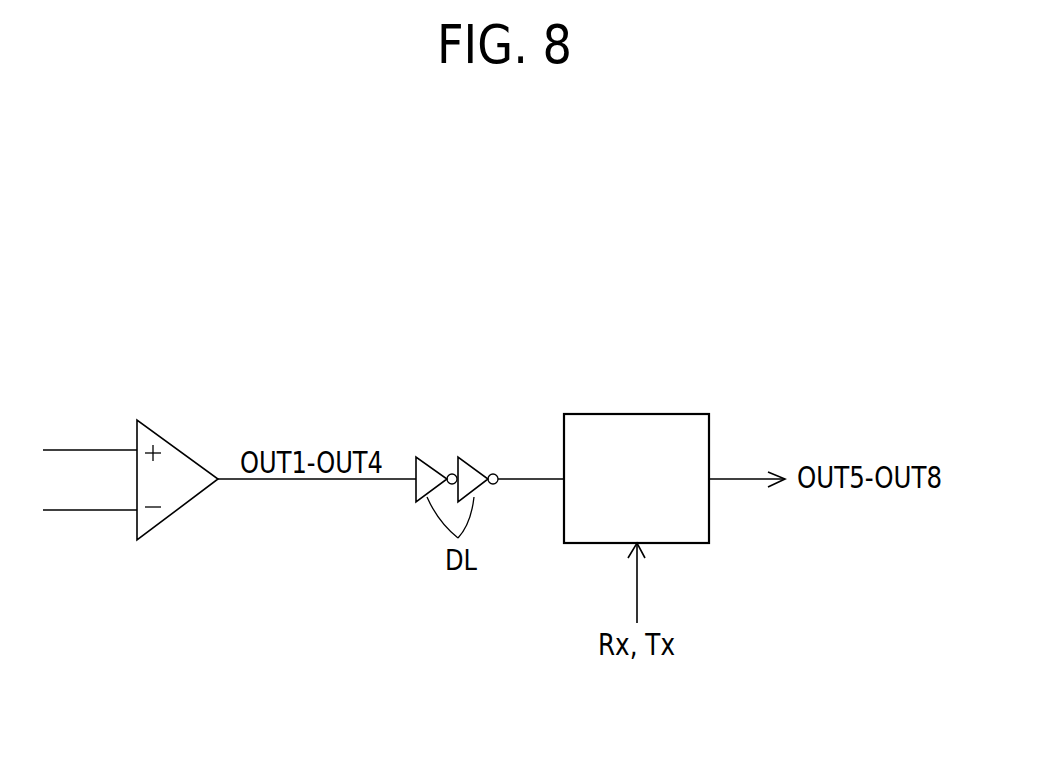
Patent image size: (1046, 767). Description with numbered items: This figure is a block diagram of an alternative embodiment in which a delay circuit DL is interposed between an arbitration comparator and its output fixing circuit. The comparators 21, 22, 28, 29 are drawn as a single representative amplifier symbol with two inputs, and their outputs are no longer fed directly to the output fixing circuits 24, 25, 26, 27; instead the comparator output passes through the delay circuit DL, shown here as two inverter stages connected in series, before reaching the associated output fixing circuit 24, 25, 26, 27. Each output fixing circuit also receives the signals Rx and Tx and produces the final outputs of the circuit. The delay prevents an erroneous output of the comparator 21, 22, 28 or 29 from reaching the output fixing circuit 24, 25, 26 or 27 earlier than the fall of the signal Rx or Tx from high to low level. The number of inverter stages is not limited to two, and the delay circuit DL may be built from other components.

The comparator 21 is at (185, 443).
The comparator 22 is at (185, 443).
The comparator 28 is at (185, 443).
The comparator 29 is at (183, 448).
The output fixing circuit 24 is at (636, 430).
The output fixing circuit 25 is at (636, 430).
The output fixing circuit 26 is at (636, 430).
The output fixing circuit 27 is at (635, 414).